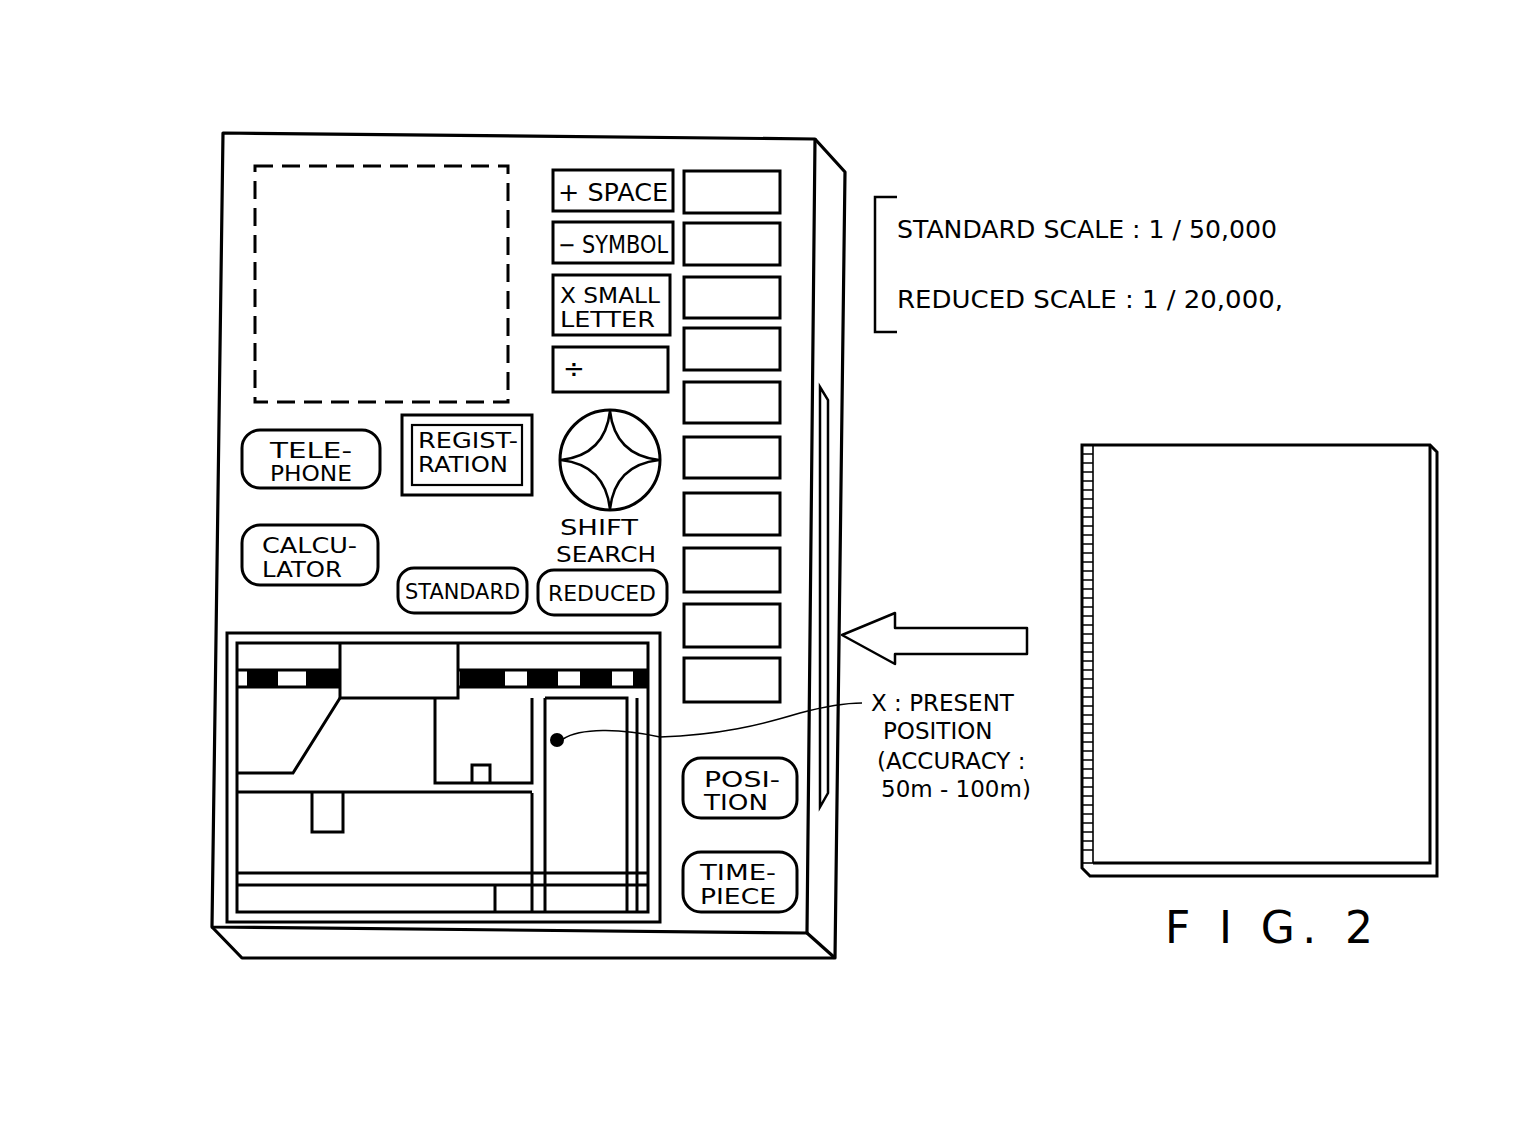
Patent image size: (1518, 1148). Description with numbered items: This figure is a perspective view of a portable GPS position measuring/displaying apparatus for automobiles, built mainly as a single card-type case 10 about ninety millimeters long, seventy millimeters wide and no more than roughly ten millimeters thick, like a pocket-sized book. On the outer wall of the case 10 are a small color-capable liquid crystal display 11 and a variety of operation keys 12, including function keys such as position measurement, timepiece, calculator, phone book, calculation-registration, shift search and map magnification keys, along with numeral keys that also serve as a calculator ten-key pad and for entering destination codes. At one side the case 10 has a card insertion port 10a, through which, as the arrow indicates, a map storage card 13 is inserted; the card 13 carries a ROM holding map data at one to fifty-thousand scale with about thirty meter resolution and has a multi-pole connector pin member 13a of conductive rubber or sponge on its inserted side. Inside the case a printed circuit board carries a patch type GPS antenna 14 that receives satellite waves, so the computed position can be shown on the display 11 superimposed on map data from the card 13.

The card-type case 10 is at (567, 147).
The card insertion port 10a is at (822, 450).
The liquid crystal display 11 is at (240, 898).
The operation keys 12 is at (750, 166).
The map storage card 13 is at (1252, 672).
The multi-pole connector pin member 13a is at (1080, 827).
The patch type GPS antenna 14 is at (430, 165).